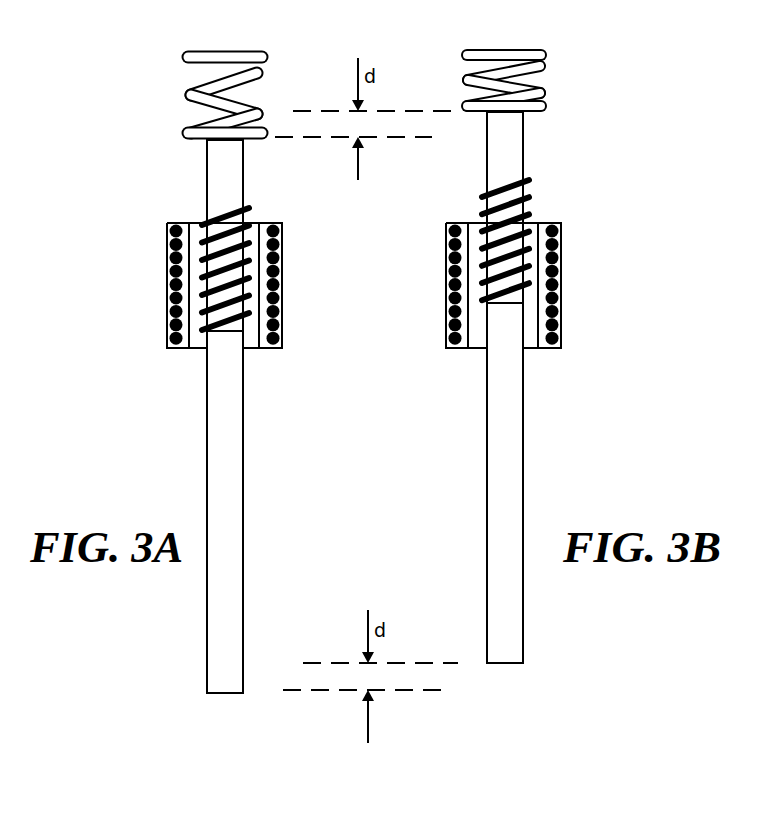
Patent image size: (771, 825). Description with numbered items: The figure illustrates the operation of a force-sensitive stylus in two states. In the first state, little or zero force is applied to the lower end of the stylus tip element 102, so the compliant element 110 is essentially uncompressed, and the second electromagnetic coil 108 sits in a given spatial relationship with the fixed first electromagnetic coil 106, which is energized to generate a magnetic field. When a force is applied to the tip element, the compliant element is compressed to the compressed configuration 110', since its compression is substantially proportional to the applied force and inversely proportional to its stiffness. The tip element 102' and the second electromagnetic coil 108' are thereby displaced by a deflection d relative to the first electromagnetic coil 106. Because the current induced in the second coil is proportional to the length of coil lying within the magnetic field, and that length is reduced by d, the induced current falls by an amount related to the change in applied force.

In FIG. 3A, the stylus tip element 102 is at (176, 416).
In FIG. 3B, the tip element in displaced position 102' is at (454, 387).
In FIG. 3A, the first electromagnetic coil 106 is at (178, 347).
In FIG. 3B, the first electromagnetic coil 106 is at (456, 347).
In FIG. 3A, the second electromagnetic coil 108 is at (173, 246).
In FIG. 3B, the second electromagnetic coil in displaced position 108' is at (555, 218).
In FIG. 3A, the compliant element 110 is at (166, 93).
In FIG. 3B, the compliant element in compressed configuration 110' is at (567, 72).